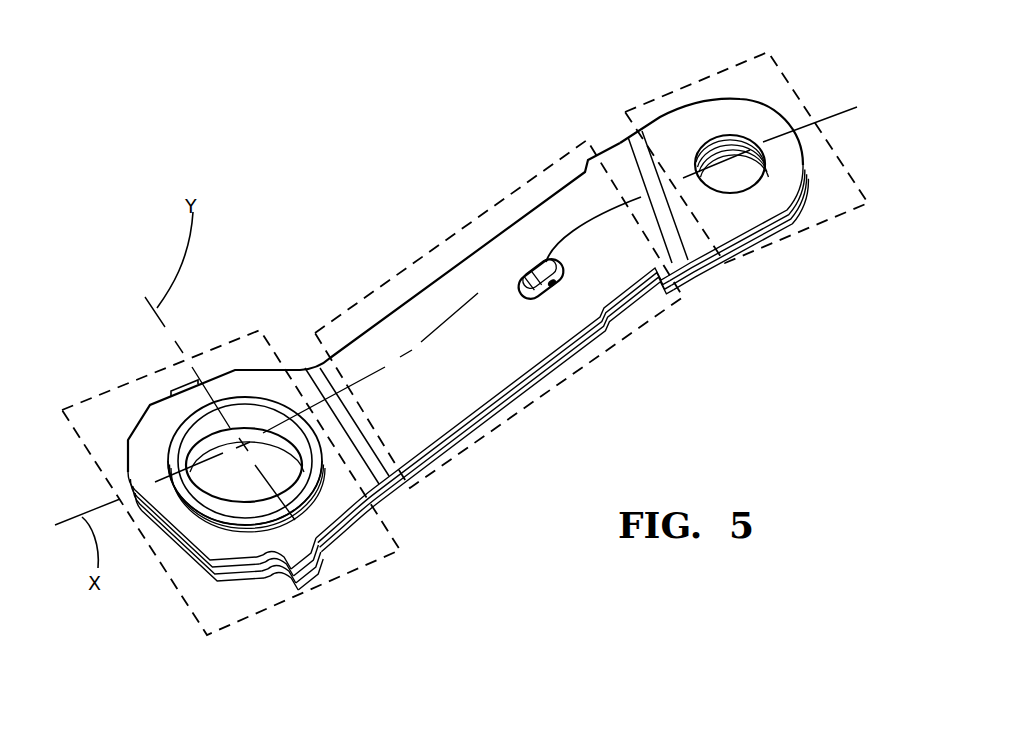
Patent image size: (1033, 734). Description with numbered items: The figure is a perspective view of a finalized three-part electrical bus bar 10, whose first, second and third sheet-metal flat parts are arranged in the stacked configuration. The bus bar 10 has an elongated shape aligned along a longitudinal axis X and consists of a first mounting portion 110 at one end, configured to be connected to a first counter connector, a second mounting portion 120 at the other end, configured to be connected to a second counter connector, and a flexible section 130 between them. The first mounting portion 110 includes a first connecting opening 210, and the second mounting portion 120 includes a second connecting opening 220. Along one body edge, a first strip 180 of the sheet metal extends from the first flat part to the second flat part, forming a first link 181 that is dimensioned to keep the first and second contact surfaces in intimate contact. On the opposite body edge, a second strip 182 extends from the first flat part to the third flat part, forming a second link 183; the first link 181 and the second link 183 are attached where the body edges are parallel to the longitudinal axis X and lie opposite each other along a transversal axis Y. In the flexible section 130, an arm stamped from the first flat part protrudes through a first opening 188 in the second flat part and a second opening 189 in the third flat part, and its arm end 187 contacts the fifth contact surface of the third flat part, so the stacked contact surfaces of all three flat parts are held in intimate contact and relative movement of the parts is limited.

The electrical bus bar 10 is at (403, 198).
The first mounting portion 110 is at (375, 563).
The second mounting portion 120 is at (797, 237).
The flexible section 130 is at (577, 369).
The first strip 180 is at (316, 613).
The first link 181 is at (307, 540).
The second strip 182 is at (130, 310).
The second link 183 is at (175, 392).
The arm end 187 is at (551, 262).
The first opening 188 is at (495, 199).
The second opening 189 is at (495, 199).
The first connecting opening 210 is at (247, 437).
The second connecting opening 220 is at (717, 153).